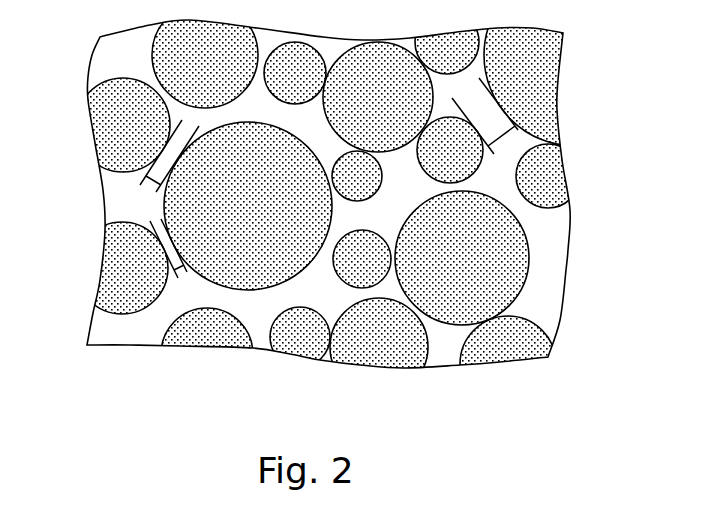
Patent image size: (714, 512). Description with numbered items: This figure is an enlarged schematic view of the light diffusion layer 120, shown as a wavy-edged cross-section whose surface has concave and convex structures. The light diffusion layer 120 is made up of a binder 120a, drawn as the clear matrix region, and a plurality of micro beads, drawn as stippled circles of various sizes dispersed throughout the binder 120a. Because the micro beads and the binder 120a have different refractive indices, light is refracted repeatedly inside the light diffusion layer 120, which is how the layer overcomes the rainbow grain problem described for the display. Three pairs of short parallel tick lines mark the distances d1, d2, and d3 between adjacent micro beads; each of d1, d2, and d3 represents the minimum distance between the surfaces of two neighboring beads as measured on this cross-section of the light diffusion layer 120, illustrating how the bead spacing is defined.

The light diffusion layer 120 is at (342, 206).
The binder 120a is at (548, 272).
The distance between adjacent micro beads d1 is at (148, 184).
The distance between adjacent micro beads d2 is at (184, 276).
The distance between adjacent micro beads d3 is at (507, 137).